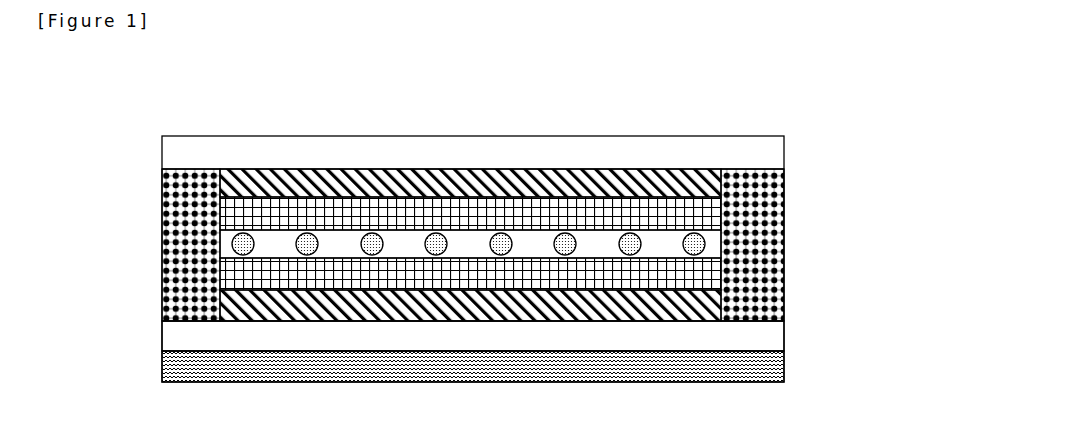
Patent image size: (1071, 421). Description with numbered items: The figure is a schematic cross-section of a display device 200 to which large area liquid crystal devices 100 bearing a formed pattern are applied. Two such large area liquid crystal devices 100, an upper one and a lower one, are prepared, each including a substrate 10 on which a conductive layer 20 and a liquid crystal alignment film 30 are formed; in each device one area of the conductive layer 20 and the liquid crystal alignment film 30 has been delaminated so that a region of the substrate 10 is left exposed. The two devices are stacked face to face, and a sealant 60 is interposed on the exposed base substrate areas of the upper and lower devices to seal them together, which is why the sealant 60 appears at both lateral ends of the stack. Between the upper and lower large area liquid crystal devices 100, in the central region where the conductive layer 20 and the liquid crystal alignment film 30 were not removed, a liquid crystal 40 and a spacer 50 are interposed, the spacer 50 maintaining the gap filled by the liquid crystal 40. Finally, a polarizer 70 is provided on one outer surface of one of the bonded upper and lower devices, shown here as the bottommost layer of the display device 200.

The substrate 10 is at (784, 332).
The conductive layer 20 is at (722, 300).
The liquid crystal alignment film 30 is at (700, 266).
The liquid crystal 40 is at (722, 247).
The spacer 50 is at (695, 232).
The sealant 60 is at (784, 180).
The polarizer 70 is at (784, 373).
The large area liquid crystal device 100 is at (855, 235).
The display device 200 is at (158, 133).